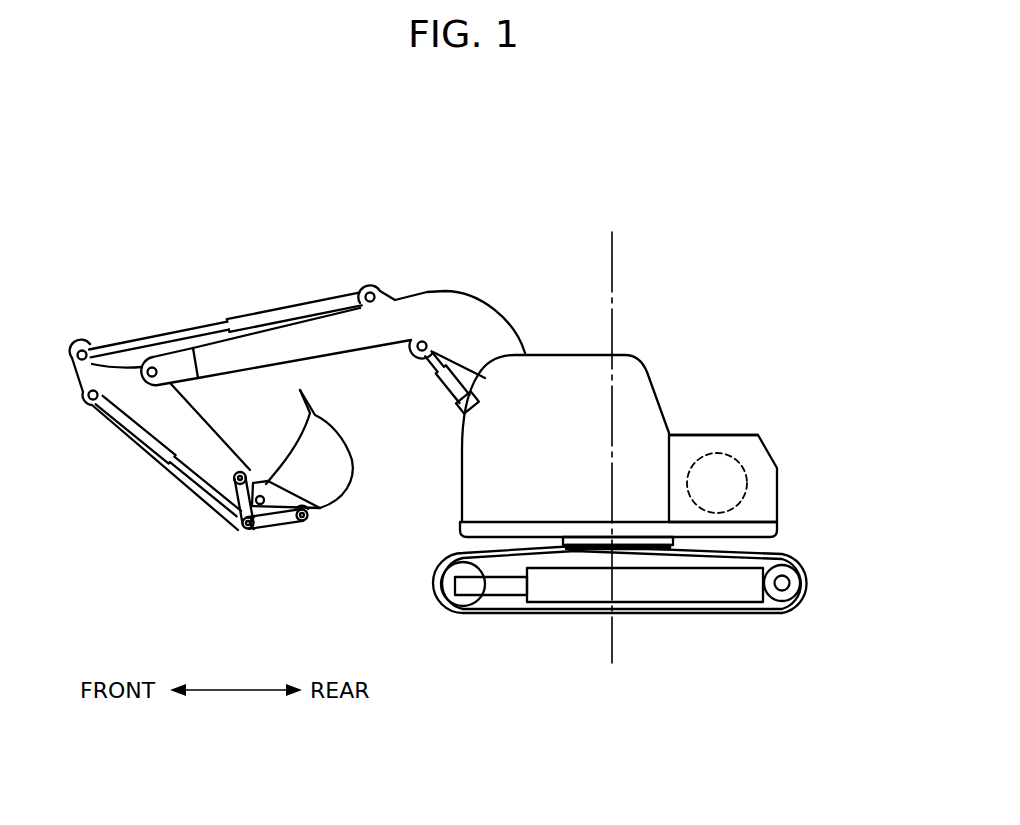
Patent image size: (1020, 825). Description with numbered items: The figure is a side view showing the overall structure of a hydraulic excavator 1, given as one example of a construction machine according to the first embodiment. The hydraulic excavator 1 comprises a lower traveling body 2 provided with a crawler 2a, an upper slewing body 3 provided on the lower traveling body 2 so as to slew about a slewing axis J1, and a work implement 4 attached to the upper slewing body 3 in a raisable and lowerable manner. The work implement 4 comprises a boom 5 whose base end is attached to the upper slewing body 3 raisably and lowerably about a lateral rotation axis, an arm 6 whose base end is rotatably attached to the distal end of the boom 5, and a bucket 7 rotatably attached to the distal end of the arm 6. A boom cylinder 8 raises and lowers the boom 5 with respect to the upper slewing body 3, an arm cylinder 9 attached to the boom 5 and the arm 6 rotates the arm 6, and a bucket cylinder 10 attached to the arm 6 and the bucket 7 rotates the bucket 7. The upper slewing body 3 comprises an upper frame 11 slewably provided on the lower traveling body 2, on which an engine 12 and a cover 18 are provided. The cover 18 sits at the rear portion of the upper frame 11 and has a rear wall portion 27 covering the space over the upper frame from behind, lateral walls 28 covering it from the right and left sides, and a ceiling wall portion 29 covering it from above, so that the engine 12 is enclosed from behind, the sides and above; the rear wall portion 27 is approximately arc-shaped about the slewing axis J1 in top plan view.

The hydraulic excavator 1 is at (737, 268).
The lower traveling body 2 is at (396, 580).
The crawler 2a is at (813, 583).
The upper slewing body 3 is at (652, 337).
The work implement 4 is at (193, 285).
The boom 5 is at (490, 317).
The arm 6 is at (200, 414).
The bucket 7 is at (337, 452).
The boom cylinder 8 is at (442, 384).
The arm cylinder 9 is at (283, 308).
The bucket cylinder 10 is at (170, 462).
The upper frame 11 is at (482, 540).
The engine 12 is at (733, 452).
The cover 18 is at (778, 517).
The rear wall portion 27 is at (779, 496).
The lateral walls 28 is at (683, 498).
The ceiling wall portion 29 is at (693, 434).
The slewing axis J1 is at (612, 255).